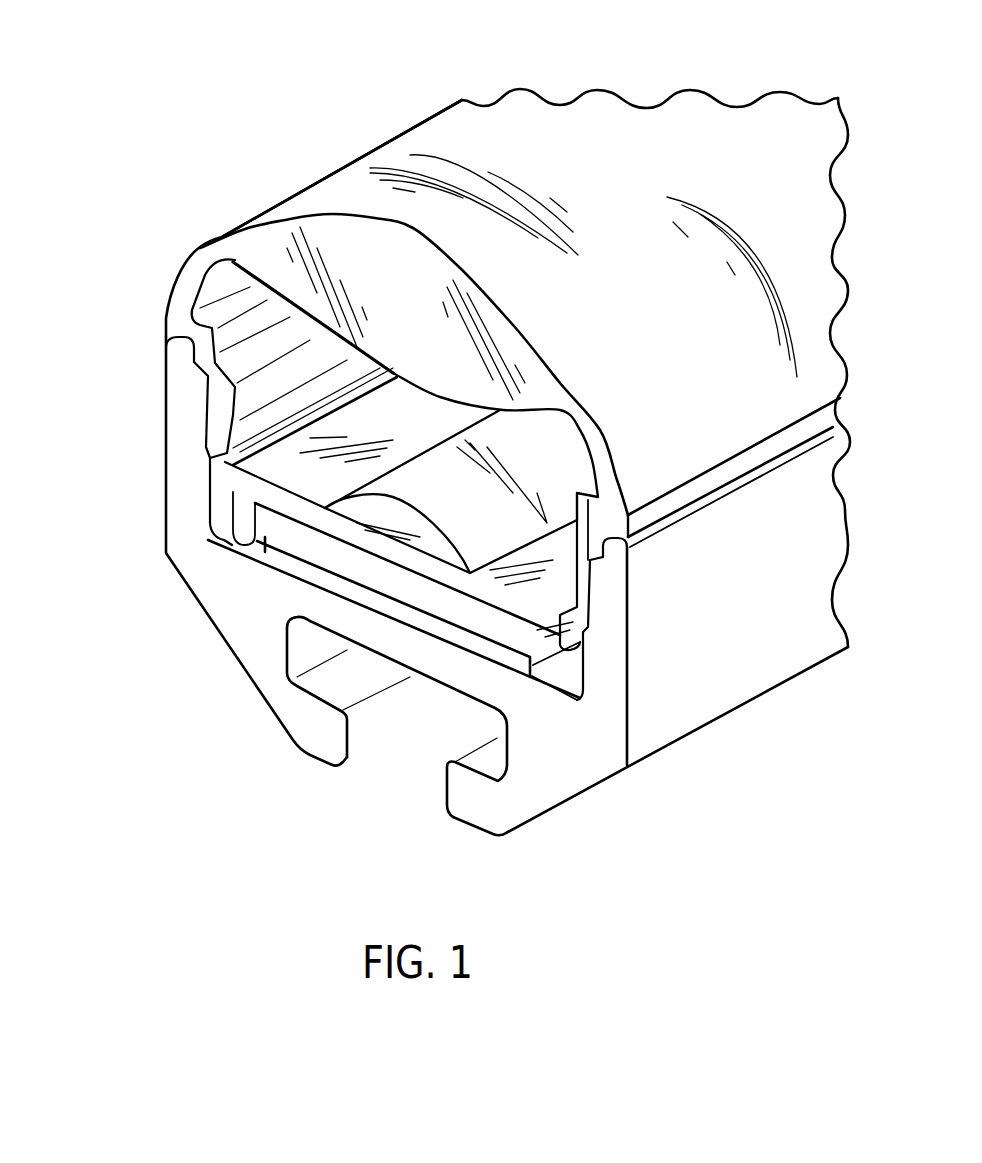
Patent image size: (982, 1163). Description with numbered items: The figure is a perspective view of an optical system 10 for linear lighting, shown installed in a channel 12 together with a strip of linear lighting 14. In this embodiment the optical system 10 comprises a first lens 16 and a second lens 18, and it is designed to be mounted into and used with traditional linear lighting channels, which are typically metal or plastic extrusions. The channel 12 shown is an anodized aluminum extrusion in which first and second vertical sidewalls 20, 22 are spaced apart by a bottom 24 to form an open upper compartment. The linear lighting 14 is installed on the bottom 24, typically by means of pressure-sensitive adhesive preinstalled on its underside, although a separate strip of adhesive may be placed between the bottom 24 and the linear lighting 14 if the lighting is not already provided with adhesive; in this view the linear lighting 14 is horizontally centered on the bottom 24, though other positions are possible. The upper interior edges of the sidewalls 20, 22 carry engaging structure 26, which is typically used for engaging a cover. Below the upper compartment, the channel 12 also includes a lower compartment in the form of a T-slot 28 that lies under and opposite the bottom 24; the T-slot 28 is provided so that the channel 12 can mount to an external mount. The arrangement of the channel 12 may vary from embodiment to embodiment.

The optical system 10 is at (293, 173).
The channel 12 is at (150, 509).
The strip of linear lighting 14 is at (353, 570).
The first lens 16 is at (467, 520).
The second lens 18 is at (535, 120).
The first vertical sidewall 20 is at (183, 405).
The second vertical sidewall 22 is at (615, 635).
The bottom 24 is at (577, 683).
The engaging structure 26 is at (170, 347).
The T-slot 28 is at (418, 760).